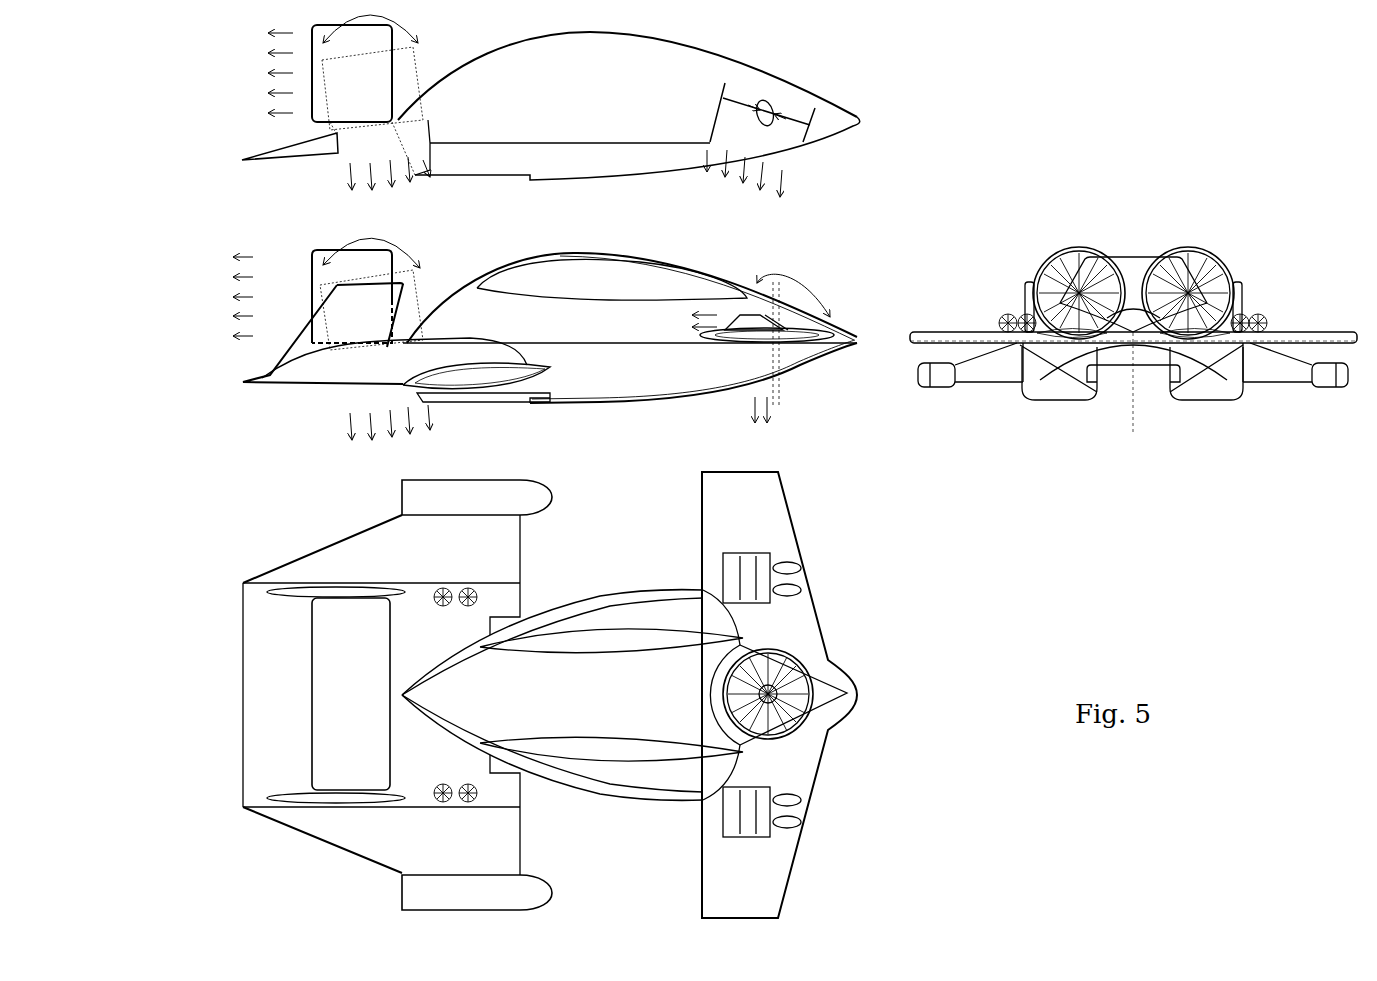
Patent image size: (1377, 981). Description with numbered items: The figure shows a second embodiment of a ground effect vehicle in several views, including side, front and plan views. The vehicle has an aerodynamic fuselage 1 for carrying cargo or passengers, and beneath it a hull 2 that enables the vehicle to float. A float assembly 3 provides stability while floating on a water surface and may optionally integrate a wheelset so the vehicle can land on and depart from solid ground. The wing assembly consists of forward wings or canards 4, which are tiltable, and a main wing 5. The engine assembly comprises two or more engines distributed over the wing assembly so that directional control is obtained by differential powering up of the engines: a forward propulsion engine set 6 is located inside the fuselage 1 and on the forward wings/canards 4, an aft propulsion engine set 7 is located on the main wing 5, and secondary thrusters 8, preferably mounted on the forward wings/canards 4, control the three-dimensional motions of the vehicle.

The fuselage 1 is at (557, 288).
The hull 2 is at (603, 367).
The float assembly 3 is at (473, 372).
The forward wings/canards 4 is at (800, 337).
The main wing 5 is at (373, 363).
The forward propulsion engine set 6 is at (1133, 335).
The aft propulsion engine set 7 is at (327, 292).
The secondary thrusters 8 is at (1027, 332).